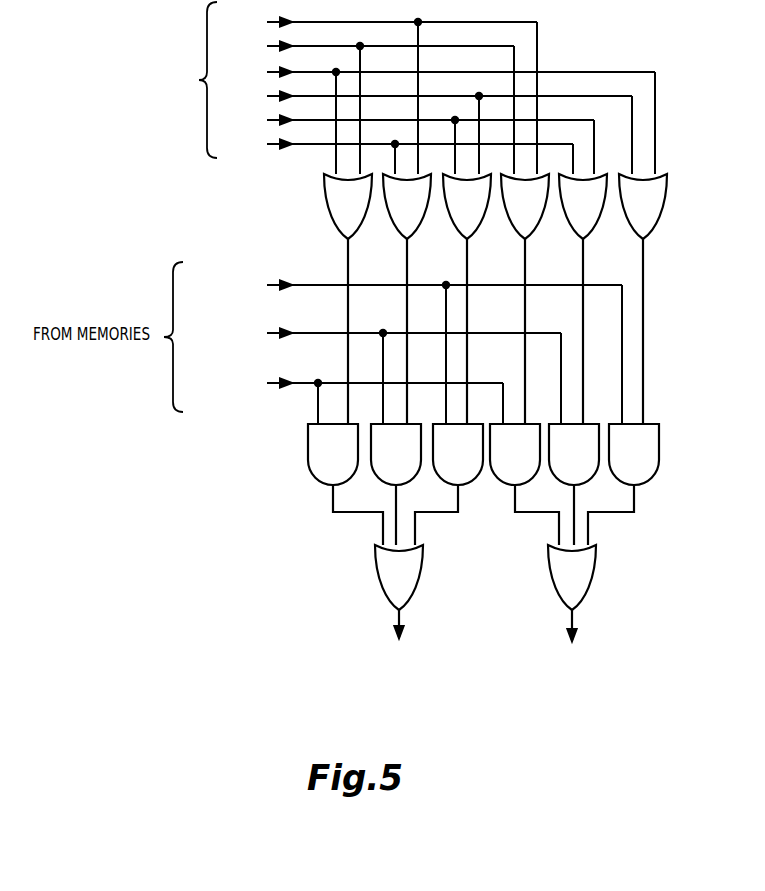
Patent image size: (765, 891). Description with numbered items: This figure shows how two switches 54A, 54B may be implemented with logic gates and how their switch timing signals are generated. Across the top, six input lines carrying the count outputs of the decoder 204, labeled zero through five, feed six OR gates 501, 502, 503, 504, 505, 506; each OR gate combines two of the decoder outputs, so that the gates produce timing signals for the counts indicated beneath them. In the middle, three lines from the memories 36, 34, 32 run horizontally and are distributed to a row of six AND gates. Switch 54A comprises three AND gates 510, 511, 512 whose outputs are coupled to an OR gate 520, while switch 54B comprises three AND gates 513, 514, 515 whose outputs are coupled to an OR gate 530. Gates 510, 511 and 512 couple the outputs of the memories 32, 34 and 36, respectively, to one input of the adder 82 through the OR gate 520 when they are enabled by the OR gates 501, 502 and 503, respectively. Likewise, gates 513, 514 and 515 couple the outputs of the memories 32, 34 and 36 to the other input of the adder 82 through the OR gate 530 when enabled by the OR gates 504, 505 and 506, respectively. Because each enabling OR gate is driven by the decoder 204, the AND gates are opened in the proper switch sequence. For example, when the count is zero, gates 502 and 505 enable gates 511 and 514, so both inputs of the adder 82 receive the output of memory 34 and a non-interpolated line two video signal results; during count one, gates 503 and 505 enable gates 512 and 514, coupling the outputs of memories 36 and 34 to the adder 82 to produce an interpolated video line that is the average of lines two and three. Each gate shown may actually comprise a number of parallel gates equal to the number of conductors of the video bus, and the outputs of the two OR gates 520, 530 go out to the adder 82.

The decoder 204 is at (352, 88).
The OR gate 501 is at (352, 299).
The OR gate 502 is at (411, 299).
The OR gate 503 is at (471, 299).
The OR gate 504 is at (529, 299).
The OR gate 505 is at (587, 299).
The OR gate 506 is at (647, 299).
The memory 36 is at (406, 350).
The memory 34 is at (375, 374).
The memory 32 is at (346, 399).
The AND gate 510 is at (345, 484).
The AND gate 511 is at (396, 484).
The AND gate 512 is at (449, 484).
The AND gate 513 is at (524, 484).
The AND gate 514 is at (574, 484).
The AND gate 515 is at (623, 484).
The OR gate 520 is at (399, 591).
The OR gate 530 is at (572, 593).
The switch 54A is at (356, 597).
The switch 54B is at (652, 598).
The adder 82 is at (485, 654).